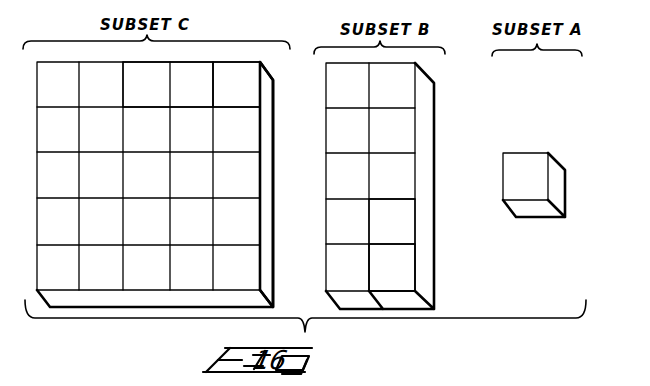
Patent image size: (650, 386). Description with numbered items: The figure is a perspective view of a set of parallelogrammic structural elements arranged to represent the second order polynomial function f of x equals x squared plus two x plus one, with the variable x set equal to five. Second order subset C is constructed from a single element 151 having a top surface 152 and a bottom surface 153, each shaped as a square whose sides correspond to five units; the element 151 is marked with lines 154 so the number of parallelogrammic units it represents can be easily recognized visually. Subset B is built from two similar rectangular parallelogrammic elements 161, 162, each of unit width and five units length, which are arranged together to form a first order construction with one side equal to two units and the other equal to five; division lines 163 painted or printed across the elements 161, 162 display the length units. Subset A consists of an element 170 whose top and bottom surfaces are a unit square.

The single element 151 is at (266, 70).
The top surface 152 is at (223, 78).
The bottom surface 153 is at (300, 228).
The lines 154 is at (181, 107).
The rectangular parallelogrammic element 161 is at (338, 277).
The rectangular parallelogrammic element 162 is at (400, 282).
The division lines 163 is at (390, 200).
The element 170 is at (556, 165).